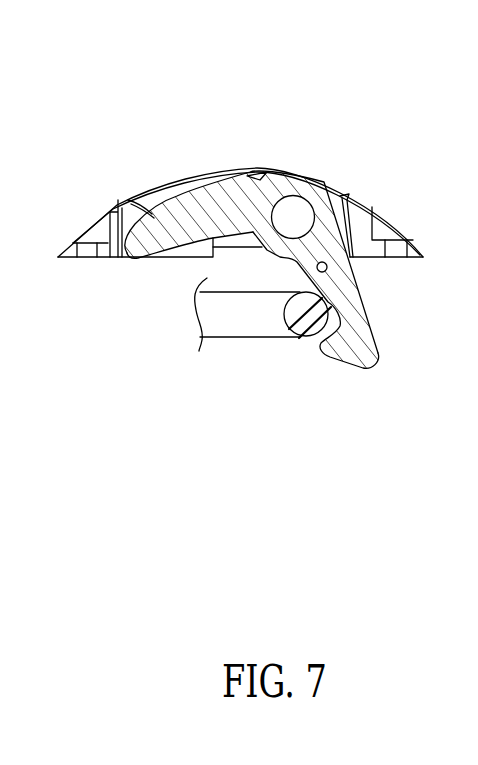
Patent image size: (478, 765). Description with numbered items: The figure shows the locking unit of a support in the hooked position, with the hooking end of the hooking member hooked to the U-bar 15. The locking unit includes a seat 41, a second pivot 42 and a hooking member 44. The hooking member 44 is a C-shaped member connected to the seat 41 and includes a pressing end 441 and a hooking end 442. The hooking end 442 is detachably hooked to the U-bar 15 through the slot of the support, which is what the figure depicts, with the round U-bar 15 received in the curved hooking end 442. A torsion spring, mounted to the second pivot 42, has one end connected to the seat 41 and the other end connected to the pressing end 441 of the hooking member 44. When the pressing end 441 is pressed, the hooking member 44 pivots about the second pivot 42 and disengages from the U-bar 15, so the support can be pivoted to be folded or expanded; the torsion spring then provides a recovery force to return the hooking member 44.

The U-bar 15 is at (243, 332).
The seat 41 is at (150, 207).
The second pivot 42 is at (295, 205).
The hooking member 44 is at (322, 190).
The pressing end 441 is at (192, 207).
The hooking end 442 is at (362, 320).